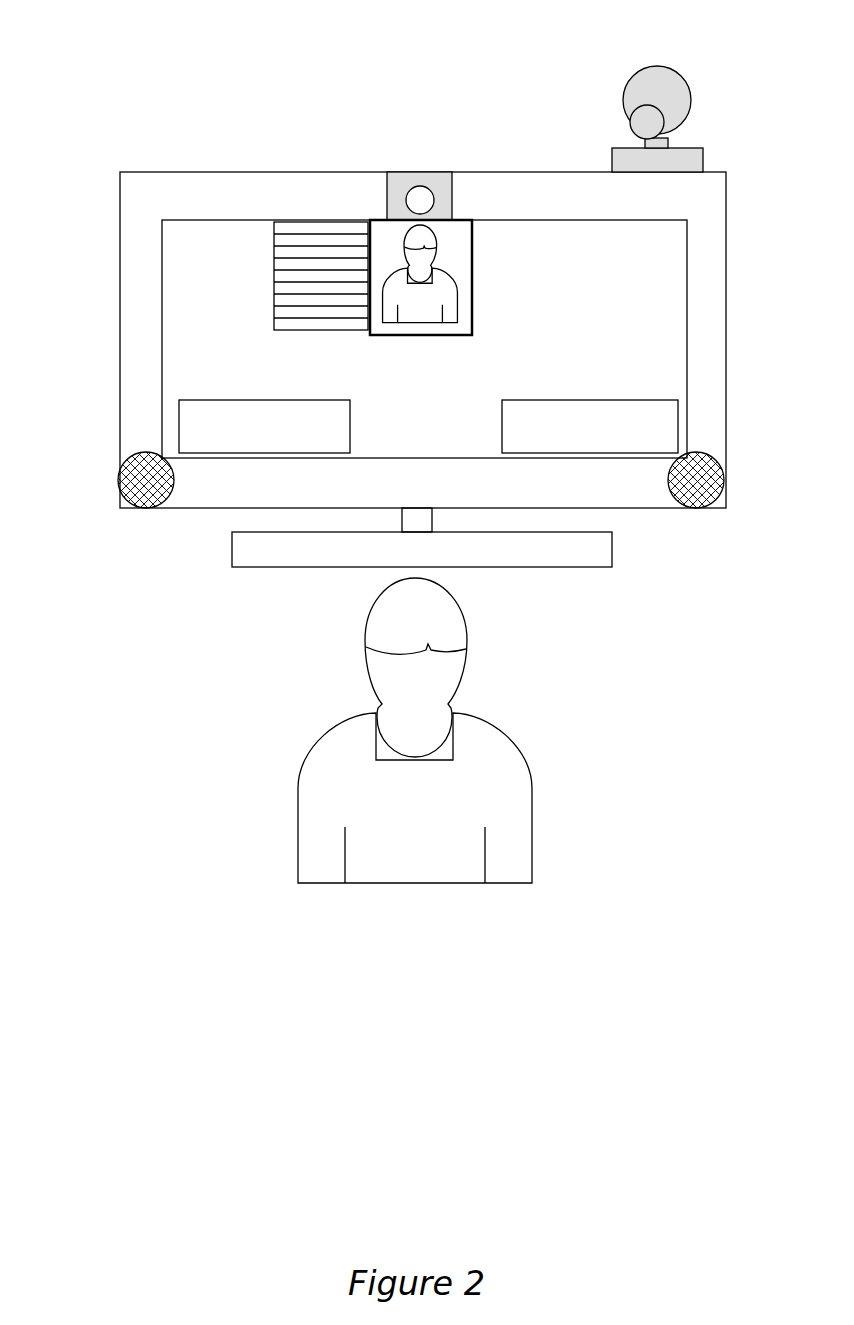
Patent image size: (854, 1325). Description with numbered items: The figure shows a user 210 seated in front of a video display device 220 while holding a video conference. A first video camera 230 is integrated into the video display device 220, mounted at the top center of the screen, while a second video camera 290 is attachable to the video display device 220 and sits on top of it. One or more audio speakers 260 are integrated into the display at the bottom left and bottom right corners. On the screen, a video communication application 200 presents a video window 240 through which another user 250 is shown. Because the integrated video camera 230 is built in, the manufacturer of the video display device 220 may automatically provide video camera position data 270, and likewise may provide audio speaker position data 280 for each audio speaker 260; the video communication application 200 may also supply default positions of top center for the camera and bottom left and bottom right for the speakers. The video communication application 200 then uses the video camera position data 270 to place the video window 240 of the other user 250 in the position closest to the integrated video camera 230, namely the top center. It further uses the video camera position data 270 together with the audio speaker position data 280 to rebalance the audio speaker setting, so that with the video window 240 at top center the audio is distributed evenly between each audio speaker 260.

The video communication application 200 is at (262, 276).
The user 210 is at (486, 706).
The video display device 220 is at (172, 158).
The video camera-1 230 is at (420, 158).
The video window 240 is at (473, 313).
The another user 250 is at (420, 327).
The audio speakers 260 is at (106, 478).
The video camera position data 270 is at (167, 427).
The audio speaker position data 280 is at (690, 427).
The video camera-2 290 is at (657, 70).